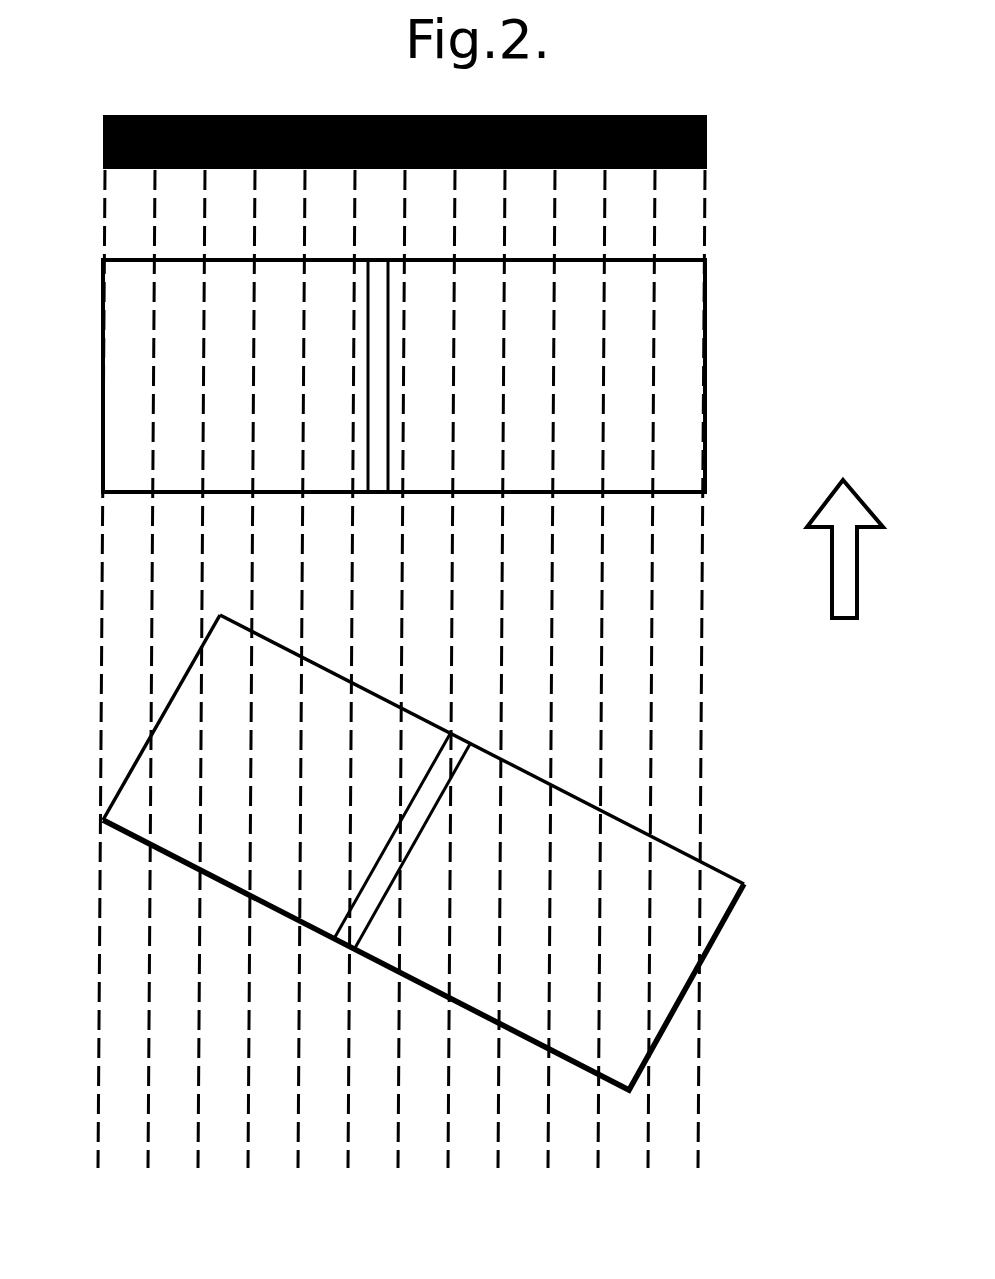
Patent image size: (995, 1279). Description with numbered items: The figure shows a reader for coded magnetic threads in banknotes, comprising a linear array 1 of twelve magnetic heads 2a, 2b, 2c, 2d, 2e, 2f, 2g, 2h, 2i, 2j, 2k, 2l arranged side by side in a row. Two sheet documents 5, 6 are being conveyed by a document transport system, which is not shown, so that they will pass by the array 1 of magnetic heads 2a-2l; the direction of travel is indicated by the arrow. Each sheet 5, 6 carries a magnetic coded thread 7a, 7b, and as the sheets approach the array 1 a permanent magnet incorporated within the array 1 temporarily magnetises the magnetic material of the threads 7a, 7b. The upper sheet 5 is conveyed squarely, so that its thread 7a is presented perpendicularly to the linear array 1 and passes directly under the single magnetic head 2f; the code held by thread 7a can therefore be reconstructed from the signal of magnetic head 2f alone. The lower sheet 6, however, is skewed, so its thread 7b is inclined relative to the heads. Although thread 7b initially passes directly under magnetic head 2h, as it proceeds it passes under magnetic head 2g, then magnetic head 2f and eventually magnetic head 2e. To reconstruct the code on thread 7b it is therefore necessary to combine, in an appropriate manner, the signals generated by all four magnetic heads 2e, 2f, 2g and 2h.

The linear array 1 is at (707, 137).
The magnetic head 2a is at (130, 142).
The magnetic head 2b is at (180, 142).
The magnetic head 2c is at (230, 142).
The magnetic head 2d is at (280, 142).
The magnetic head 2e is at (330, 142).
The magnetic head 2f is at (380, 142).
The magnetic head 2g is at (430, 142).
The magnetic head 2h is at (480, 142).
The magnetic head 2i is at (530, 142).
The magnetic head 2j is at (580, 142).
The magnetic head 2k is at (630, 142).
The magnetic head 2l is at (680, 142).
The sheet document 5 is at (103, 278).
The sheet document 6 is at (137, 752).
The magnetic coded thread 7a is at (378, 262).
The magnetic coded thread 7b is at (457, 740).